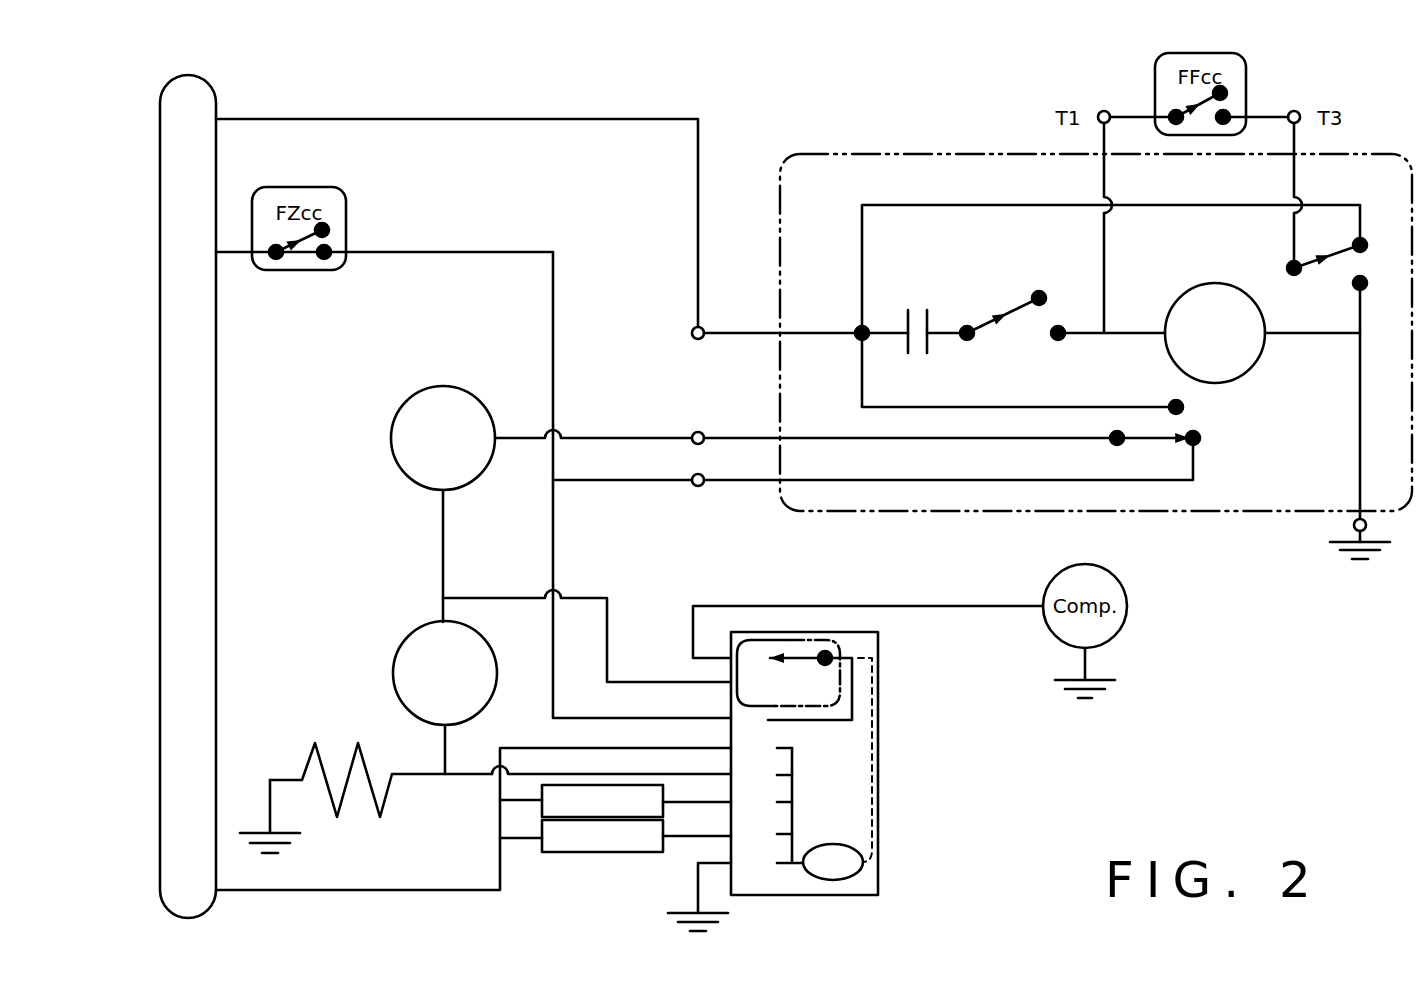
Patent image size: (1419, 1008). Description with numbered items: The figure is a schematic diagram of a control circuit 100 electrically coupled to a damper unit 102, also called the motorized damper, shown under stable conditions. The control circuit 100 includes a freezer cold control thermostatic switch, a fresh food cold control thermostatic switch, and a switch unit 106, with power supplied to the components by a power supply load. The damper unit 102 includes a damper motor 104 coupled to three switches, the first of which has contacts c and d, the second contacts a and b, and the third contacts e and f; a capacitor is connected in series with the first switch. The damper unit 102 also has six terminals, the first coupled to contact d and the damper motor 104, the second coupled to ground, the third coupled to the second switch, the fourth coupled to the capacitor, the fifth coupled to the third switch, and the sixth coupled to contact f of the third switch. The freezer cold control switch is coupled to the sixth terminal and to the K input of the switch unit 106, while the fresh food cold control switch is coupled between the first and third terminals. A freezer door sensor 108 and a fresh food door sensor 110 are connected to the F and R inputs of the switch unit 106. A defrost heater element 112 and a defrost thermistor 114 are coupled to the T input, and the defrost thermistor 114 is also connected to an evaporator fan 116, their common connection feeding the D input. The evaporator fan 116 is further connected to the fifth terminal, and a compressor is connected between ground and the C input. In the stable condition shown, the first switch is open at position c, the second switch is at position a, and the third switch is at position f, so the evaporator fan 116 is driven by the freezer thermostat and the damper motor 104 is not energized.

The control circuit 100 is at (500, 98).
The damper unit 102 is at (820, 152).
The damper motor 104 is at (1243, 378).
The switch unit 106 is at (880, 832).
The freezer door sensor 108 is at (542, 803).
The fresh food door sensor 110 is at (542, 849).
The defrost heater element 112 is at (307, 706).
The defrost thermistor 114 is at (395, 648).
The evaporator fan 116 is at (443, 387).